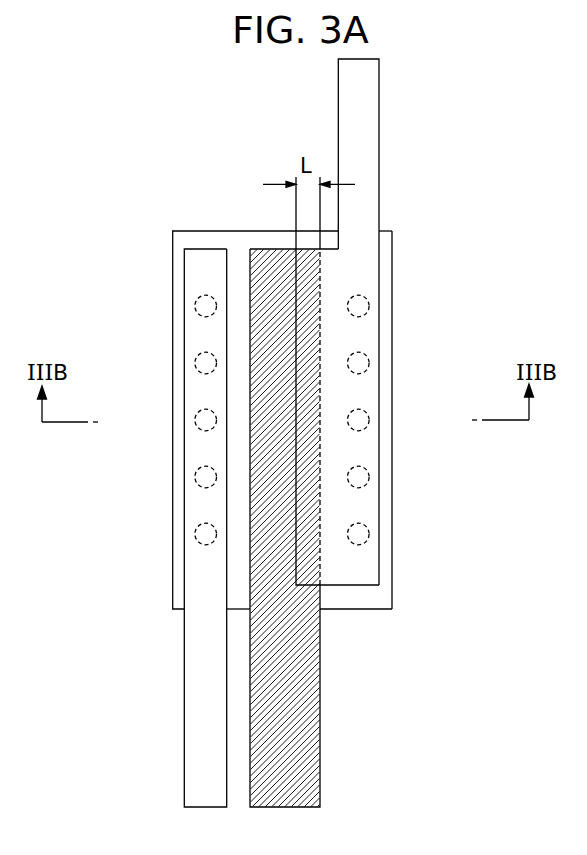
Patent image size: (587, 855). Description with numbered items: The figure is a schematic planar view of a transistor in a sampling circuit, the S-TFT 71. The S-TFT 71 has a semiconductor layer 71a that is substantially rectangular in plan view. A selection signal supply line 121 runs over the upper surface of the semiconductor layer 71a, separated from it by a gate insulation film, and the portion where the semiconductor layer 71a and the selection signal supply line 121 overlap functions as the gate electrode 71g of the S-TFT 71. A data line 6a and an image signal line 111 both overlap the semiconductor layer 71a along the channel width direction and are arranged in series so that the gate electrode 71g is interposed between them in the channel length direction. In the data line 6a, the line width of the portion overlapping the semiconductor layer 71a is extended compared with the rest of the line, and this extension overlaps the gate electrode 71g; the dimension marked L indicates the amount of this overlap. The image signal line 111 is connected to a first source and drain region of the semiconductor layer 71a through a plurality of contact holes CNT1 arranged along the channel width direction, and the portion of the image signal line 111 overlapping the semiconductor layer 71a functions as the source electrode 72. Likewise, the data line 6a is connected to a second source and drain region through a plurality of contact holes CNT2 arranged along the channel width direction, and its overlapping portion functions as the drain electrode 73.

The data line 6a is at (368, 97).
The S-TFT 71 is at (445, 217).
The semiconductor layer 71a is at (392, 273).
The gate electrode 71g is at (261, 268).
The source electrode 72 is at (195, 328).
The drain electrode 73 is at (370, 560).
The image signal line 111 is at (197, 740).
The selection signal supply line 121 is at (311, 738).
The contact holes CNT1 is at (205, 410).
The contact holes CNT2 is at (360, 410).